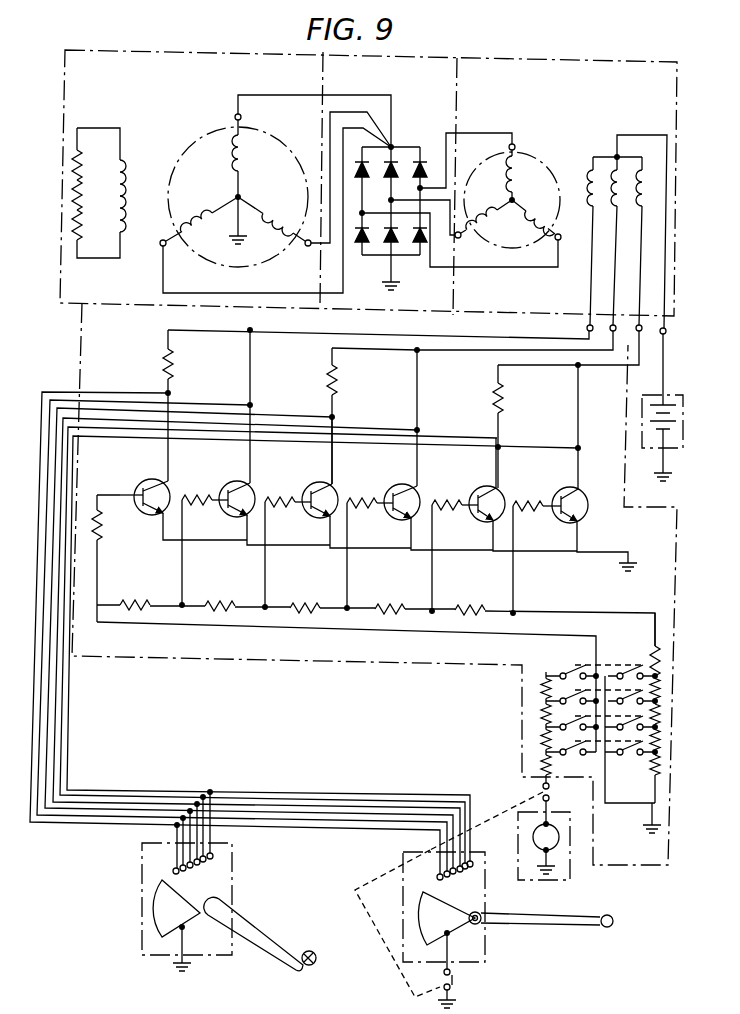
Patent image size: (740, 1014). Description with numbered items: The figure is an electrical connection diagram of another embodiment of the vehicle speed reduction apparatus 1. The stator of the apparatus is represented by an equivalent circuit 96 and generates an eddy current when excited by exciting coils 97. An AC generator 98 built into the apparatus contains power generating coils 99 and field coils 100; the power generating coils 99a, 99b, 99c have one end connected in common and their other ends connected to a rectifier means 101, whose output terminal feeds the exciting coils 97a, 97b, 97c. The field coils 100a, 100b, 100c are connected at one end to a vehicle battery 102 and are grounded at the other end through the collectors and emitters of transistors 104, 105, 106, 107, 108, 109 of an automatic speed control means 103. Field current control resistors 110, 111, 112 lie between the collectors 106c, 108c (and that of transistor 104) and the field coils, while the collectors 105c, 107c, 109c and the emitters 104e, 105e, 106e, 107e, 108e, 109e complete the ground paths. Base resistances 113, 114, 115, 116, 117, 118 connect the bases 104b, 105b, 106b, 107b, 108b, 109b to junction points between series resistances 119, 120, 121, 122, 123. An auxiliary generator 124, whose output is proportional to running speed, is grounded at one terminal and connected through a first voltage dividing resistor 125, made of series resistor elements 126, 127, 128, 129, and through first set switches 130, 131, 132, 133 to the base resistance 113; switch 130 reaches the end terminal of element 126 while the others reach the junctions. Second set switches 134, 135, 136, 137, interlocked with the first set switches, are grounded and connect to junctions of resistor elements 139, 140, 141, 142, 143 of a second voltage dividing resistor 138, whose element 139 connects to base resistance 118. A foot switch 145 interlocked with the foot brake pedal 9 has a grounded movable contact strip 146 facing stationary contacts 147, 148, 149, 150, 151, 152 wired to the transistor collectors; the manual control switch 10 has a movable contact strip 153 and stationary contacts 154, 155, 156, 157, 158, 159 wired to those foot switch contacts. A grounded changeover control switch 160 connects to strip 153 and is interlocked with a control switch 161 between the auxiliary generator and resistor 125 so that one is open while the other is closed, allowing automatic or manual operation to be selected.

The speed reduction apparatus 1 is at (155, 52).
The foot brake pedal 9 is at (310, 950).
The manual control switch 10 is at (487, 937).
The equivalent circuit 96 is at (100, 128).
The exciting coils 97 is at (205, 136).
The exciting coil 97a is at (245, 148).
The exciting coil 97b is at (278, 218).
The exciting coil 97c is at (195, 218).
The AC generator 98 is at (568, 67).
The power generating coils 99 is at (527, 160).
The power generating coil 99a is at (519, 172).
The power generating coil 99b is at (537, 228).
The power generating coil 99c is at (492, 218).
The field coils 100 is at (628, 134).
The field coil 100a is at (598, 212).
The field coil 100b is at (622, 212).
The field coil 100c is at (648, 188).
The rectifier means 101 is at (401, 143).
The battery 102 is at (679, 396).
The automatic speed control means 103 is at (80, 382).
The transistor 104 is at (146, 513).
The base 104b is at (138, 488).
The emitter 104e is at (155, 480).
The transistor 105 is at (232, 518).
The base 105b is at (212, 500).
The collector 105c is at (252, 483).
The emitter 105e is at (243, 522).
The transistor 106 is at (302, 598).
The base 106b is at (297, 501).
The collector 106c is at (334, 483).
The emitter 106e is at (325, 522).
The transistor 107 is at (383, 598).
The base 107b is at (383, 501).
The collector 107c is at (419, 485).
The emitter 107e is at (406, 522).
The transistor 108 is at (478, 524).
The base 108b is at (461, 507).
The collector 108c is at (498, 488).
The emitter 108e is at (490, 522).
The transistor 109 is at (563, 535).
The base 109b is at (545, 508).
The collector 109c is at (582, 505).
The emitter 109e is at (576, 524).
The field current control resistor 110 is at (172, 353).
The field current control resistor 111 is at (337, 379).
The field current control resistor 112 is at (502, 392).
The base resistance 113 is at (100, 556).
The base resistance 114 is at (203, 506).
The base resistance 115 is at (284, 507).
The base resistance 116 is at (365, 508).
The base resistance 117 is at (446, 510).
The base resistance 118 is at (528, 511).
The series resistance 119 is at (133, 612).
The series resistance 120 is at (217, 613).
The series resistance 121 is at (302, 614).
The series resistance 122 is at (385, 615).
The series resistance 123 is at (467, 616).
The auxiliary generator 124 is at (568, 863).
The first voltage dividing resistor 125 is at (544, 734).
The resistor element 126 is at (545, 682).
The resistor element 127 is at (545, 714).
The resistor element 128 is at (545, 754).
The resistor element 129 is at (545, 775).
The first set switch 130 is at (585, 660).
The first set switch 131 is at (553, 672).
The first set switch 132 is at (549, 797).
The first set switch 133 is at (584, 750).
The second set switch 134 is at (658, 661).
The second set switch 135 is at (646, 675).
The second set switch 136 is at (660, 711).
The second set switch 137 is at (627, 755).
The second voltage dividing resistor 138 is at (660, 736).
The resistor element 139 is at (668, 640).
The resistor element 140 is at (646, 699).
The resistor element 141 is at (660, 760).
The resistor element 142 is at (660, 782).
The resistor element 143 is at (658, 806).
The foot switch 145 is at (225, 975).
The movable contact strip 146 is at (156, 918).
The stationary contact 147 is at (174, 873).
The stationary contact 148 is at (180, 868).
The stationary contact 149 is at (187, 863).
The stationary contact 150 is at (200, 864).
The stationary contact 151 is at (206, 860).
The stationary contact 152 is at (213, 855).
The movable contact strip 153 is at (418, 925).
The stationary contact 154 is at (437, 881).
The stationary contact 155 is at (444, 876).
The stationary contact 156 is at (450, 869).
The stationary contact 157 is at (462, 872).
The stationary contact 158 is at (443, 882).
The stationary contact 159 is at (467, 862).
The changeover control switch 160 is at (458, 980).
The control switch 161 is at (540, 793).